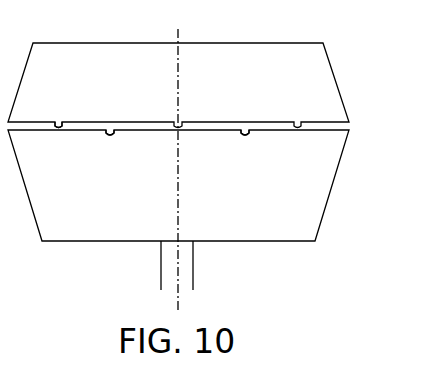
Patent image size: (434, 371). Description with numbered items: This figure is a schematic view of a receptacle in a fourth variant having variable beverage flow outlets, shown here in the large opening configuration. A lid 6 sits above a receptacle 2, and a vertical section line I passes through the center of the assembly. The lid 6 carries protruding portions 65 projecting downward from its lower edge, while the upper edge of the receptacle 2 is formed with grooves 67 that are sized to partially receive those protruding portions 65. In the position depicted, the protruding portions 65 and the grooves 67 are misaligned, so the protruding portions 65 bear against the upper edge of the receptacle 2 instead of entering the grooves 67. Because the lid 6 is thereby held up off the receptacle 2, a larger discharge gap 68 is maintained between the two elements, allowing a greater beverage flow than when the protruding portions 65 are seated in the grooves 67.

The section line I is at (178, 34).
The lid 6 is at (332, 62).
The receptacle 2 is at (332, 194).
The protruding portions 65 is at (58, 120).
The discharge gap 68 is at (93, 124).
The grooves 67 is at (245, 137).